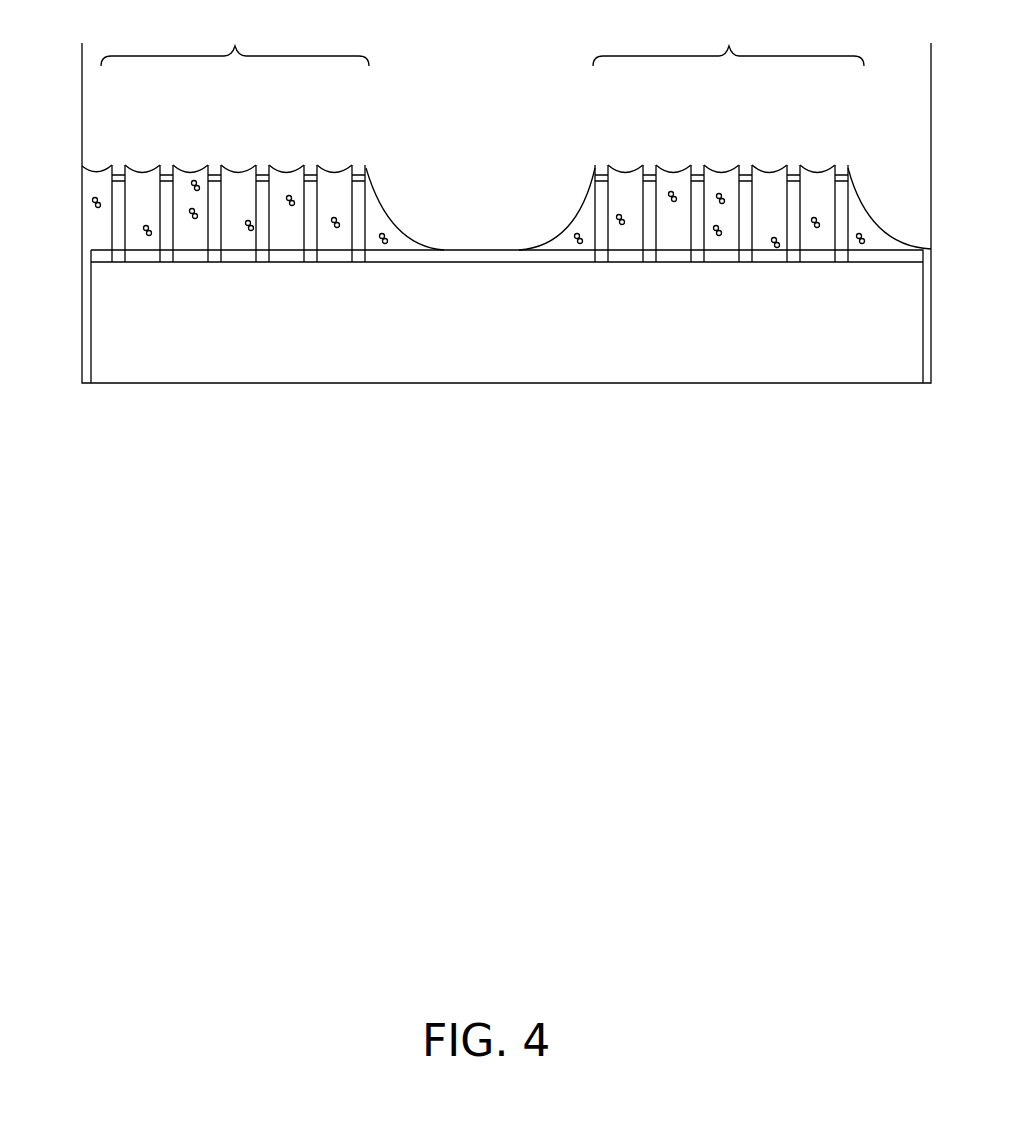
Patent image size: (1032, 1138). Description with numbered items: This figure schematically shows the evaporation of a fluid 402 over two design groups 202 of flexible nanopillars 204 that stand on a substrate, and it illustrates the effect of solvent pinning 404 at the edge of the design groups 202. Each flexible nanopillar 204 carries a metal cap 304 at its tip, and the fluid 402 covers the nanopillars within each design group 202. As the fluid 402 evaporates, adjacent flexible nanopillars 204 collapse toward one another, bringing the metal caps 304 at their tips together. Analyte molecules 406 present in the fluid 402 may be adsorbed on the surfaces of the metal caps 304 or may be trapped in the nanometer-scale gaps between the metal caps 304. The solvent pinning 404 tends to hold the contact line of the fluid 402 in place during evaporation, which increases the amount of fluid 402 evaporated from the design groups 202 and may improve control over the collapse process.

The design groups 202 is at (482, 37).
The flexible nanopillars 204 is at (596, 220).
The metal caps 304 is at (836, 157).
The fluid 402 is at (809, 158).
The solvent pinning 404 is at (514, 244).
The analyte molecules 406 is at (851, 228).